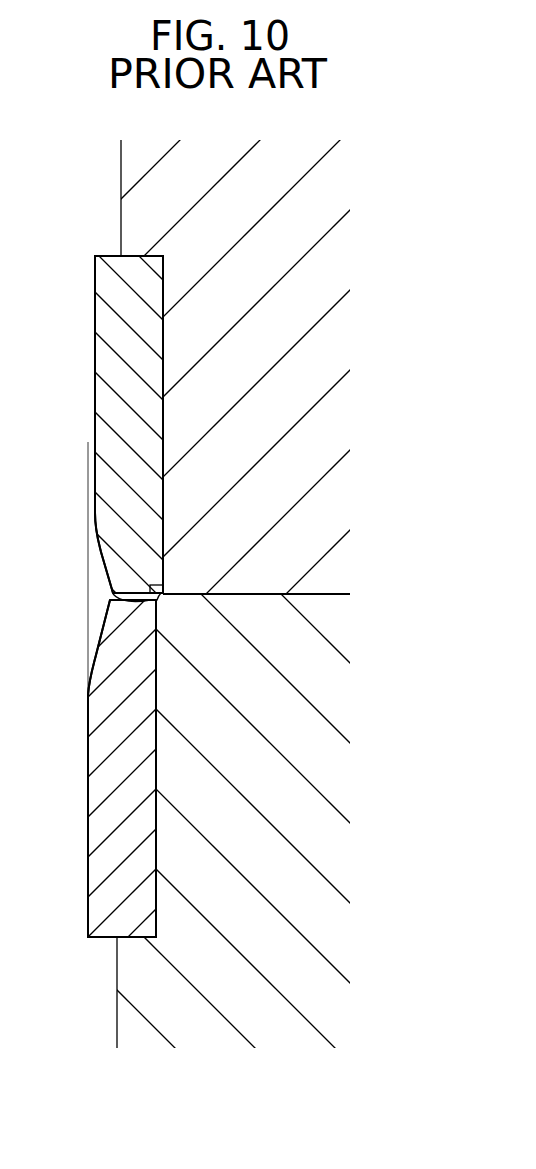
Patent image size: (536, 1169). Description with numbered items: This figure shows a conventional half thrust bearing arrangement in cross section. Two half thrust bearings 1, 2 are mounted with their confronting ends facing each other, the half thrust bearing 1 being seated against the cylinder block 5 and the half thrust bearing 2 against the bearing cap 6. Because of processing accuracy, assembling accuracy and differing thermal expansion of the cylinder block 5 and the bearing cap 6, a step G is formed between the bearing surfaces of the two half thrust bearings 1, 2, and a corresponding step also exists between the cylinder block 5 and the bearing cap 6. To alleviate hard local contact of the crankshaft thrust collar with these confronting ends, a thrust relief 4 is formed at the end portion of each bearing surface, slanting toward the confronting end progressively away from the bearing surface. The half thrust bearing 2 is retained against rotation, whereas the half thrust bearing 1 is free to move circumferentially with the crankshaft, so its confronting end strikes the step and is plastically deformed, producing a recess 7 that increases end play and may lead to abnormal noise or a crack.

The half thrust bearing 1 is at (95, 310).
The half thrust bearing 2 is at (88, 793).
The thrust relief 4 is at (100, 546).
The cylinder block 5 is at (355, 422).
The bearing cap 6 is at (353, 705).
The recess 7 is at (110, 599).
The step G is at (121, 452).